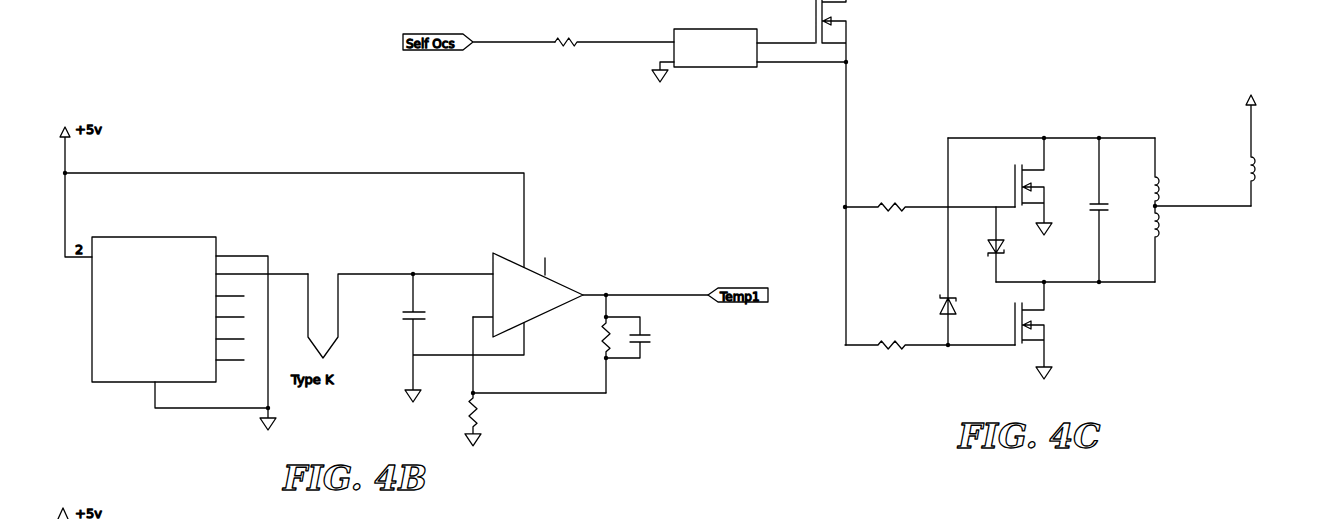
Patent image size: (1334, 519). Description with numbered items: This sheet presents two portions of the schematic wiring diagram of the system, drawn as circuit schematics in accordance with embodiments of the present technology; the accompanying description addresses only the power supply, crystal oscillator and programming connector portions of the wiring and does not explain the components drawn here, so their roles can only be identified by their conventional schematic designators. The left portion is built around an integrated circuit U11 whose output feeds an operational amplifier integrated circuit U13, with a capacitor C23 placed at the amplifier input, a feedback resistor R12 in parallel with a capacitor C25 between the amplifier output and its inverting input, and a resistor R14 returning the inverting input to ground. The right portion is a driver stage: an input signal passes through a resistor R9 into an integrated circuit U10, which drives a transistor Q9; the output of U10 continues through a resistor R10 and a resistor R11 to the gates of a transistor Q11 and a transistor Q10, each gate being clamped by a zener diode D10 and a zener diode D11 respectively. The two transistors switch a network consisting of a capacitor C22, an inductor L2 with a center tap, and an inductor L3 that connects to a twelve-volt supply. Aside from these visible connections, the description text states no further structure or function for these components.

In FIG. 4B, the LT1025 thermocouple cold junction compensator U11 is at (200, 325).
In FIG. 4B, the 0.1uF capacitor C23 is at (450, 337).
In FIG. 4B, the LTC1050 operational amplifier U13 is at (534, 301).
In FIG. 4B, the 246k feedback resistor R12 is at (635, 343).
In FIG. 4B, the 0.068uF feedback capacitor C25 is at (649, 339).
In FIG. 4B, the 1K resistor R14 is at (526, 381).
In FIG. 4C, the 1K resistor R9 is at (608, 32).
In FIG. 4C, the VOM1271 photovoltaic MOSFET driver U10 is at (750, 179).
In FIG. 4C, the IPP200N15N3 MOSFET Q9 is at (865, 31).
In FIG. 4C, the 1K gate resistor R10 is at (929, 197).
In FIG. 4C, the 1K gate resistor R11 is at (930, 335).
In FIG. 4C, the 12V zener diode D11 is at (948, 241).
In FIG. 4C, the 12V zener diode D10 is at (994, 244).
In FIG. 4C, the IPP200N15N3 MOSFET Q11 is at (1005, 176).
In FIG. 4C, the IPP200N15N3 MOSFET Q10 is at (991, 330).
In FIG. 4C, the 1uF capacitor C22 is at (1109, 210).
In FIG. 4C, the 4.4uH inductor L2 is at (1202, 210).
In FIG. 4C, the 6.2uH inductor L3 is at (1278, 150).